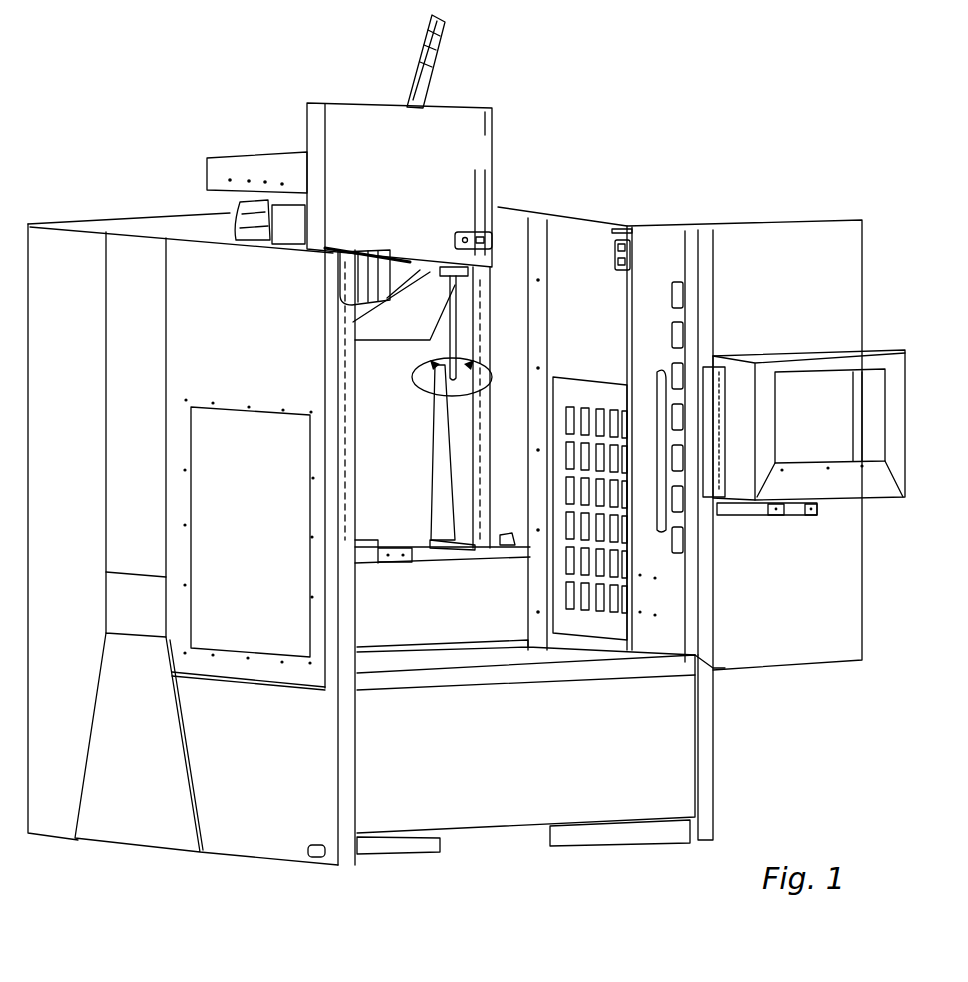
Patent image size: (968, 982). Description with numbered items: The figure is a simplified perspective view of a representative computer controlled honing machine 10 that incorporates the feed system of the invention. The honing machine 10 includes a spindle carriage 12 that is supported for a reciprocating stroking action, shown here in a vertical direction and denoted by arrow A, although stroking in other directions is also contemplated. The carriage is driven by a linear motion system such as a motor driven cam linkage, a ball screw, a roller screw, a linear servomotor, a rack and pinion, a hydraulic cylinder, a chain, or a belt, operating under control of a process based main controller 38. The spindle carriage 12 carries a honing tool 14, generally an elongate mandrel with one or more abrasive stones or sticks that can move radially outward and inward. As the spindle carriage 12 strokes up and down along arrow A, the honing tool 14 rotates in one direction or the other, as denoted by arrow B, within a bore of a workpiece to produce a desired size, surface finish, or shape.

The honing machine 10 is at (728, 163).
The spindle carriage 12 is at (493, 150).
The honing tool 14 is at (458, 328).
The main controller 38 is at (882, 347).
The arrow A is at (527, 20).
The arrow B is at (433, 365).